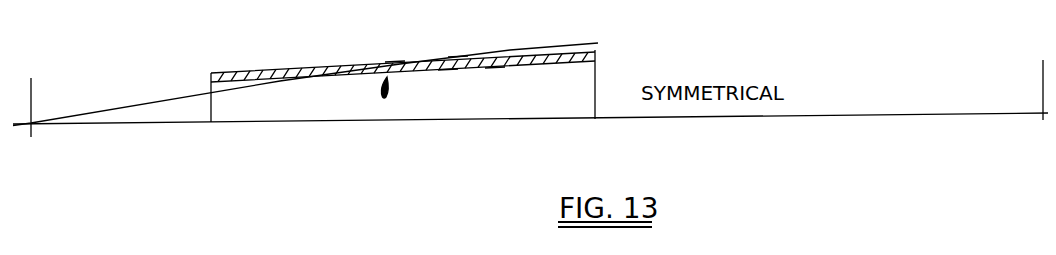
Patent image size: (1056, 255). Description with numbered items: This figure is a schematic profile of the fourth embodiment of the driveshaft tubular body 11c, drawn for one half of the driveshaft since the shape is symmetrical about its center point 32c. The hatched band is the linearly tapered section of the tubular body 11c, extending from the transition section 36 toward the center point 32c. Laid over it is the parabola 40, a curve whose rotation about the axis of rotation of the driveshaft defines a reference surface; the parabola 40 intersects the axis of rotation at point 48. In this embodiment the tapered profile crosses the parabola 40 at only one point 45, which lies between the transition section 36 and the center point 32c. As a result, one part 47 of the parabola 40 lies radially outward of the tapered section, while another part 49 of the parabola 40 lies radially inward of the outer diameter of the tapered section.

The transition section 36 is at (300, 70).
The parabola 40 is at (228, 88).
The part of the parabola 49 is at (345, 79).
The point 45 is at (394, 63).
The part of the parabola 47 is at (457, 56).
The center point 32c is at (591, 50).
The point 48 is at (448, 67).
The tubular body 11c is at (383, 98).